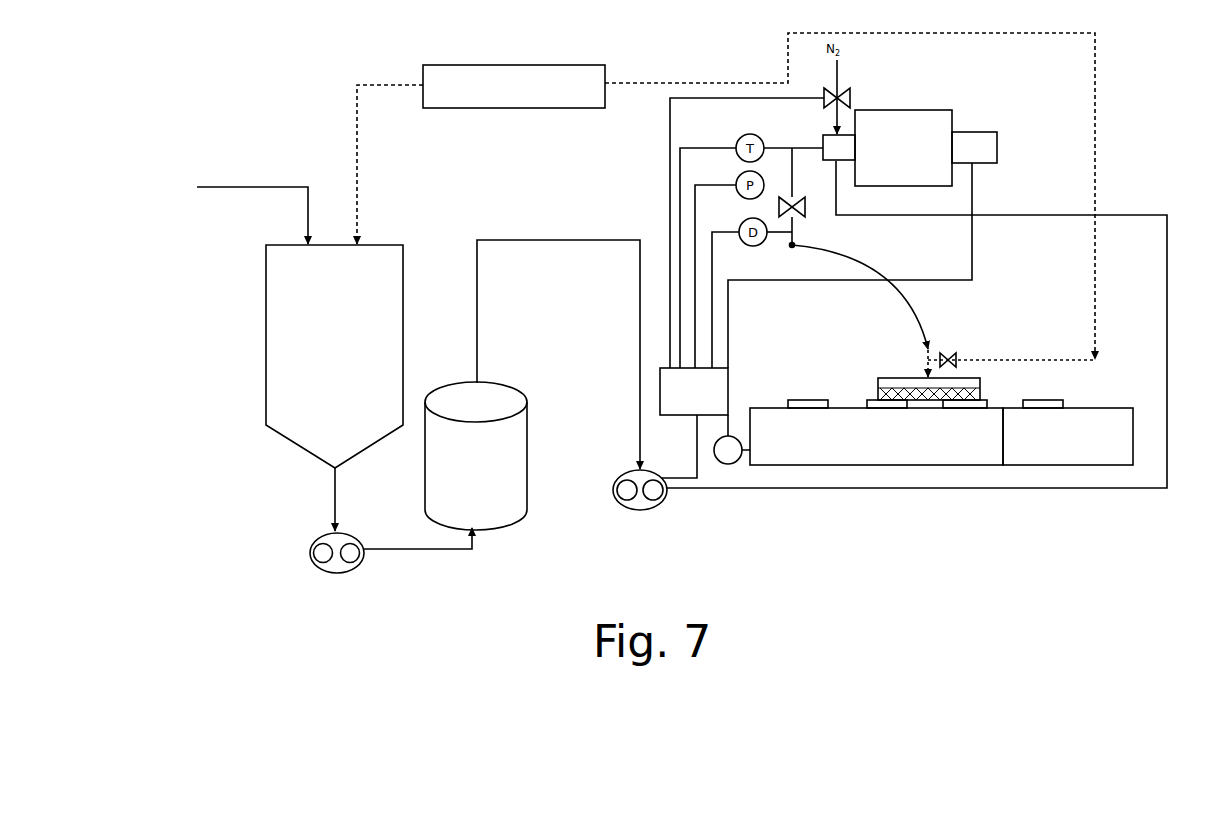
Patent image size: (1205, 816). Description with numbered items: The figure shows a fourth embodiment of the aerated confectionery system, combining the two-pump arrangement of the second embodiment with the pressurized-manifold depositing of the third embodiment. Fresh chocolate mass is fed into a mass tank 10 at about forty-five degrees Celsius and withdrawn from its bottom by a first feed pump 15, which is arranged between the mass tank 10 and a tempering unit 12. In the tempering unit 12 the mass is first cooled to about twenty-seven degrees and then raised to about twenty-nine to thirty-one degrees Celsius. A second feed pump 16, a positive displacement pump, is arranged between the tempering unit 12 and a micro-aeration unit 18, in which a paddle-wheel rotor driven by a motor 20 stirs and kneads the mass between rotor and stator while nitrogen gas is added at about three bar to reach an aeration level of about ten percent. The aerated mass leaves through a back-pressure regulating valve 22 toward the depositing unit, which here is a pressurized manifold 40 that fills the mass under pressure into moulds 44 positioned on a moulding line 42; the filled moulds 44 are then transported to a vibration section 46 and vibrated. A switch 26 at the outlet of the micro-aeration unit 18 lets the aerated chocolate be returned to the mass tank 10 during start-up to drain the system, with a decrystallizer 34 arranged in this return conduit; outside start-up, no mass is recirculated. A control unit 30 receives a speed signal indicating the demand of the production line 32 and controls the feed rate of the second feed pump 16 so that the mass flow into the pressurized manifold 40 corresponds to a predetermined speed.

The mass tank 10 is at (334, 388).
The tempering unit 12 is at (476, 456).
The first feed pump 15 is at (391, 567).
The second feed pump 16 is at (640, 508).
The micro-aeration unit 18 is at (903, 148).
The motor 20 is at (975, 134).
The back-pressure regulating valve 22 is at (807, 220).
The switch 26 is at (790, 141).
The control unit 30 is at (694, 391).
The production line 32 is at (732, 439).
The decrystallizer 34 is at (726, 196).
The pressurized manifold 40 is at (978, 377).
The moulding line 42 is at (876, 432).
The moulds 44 is at (1070, 400).
The vibration section 46 is at (1068, 436).